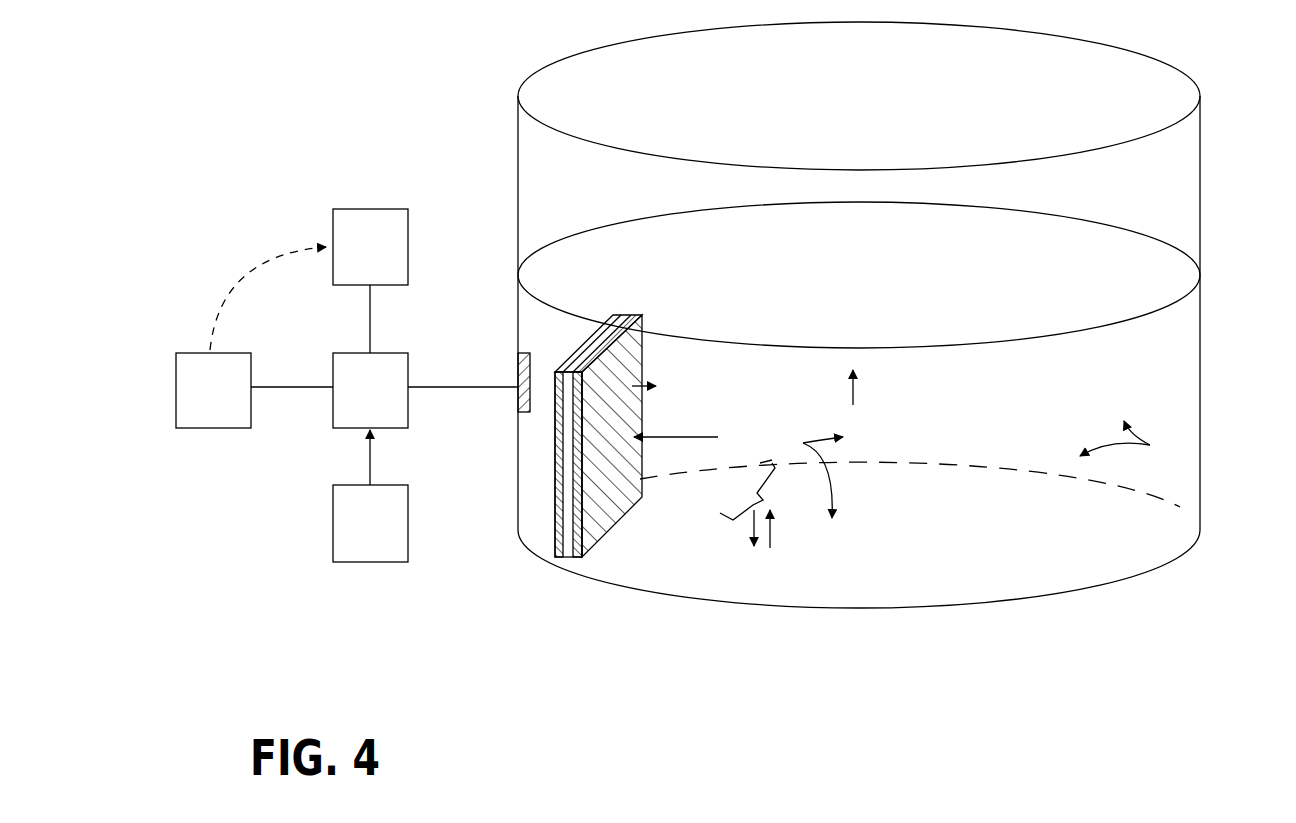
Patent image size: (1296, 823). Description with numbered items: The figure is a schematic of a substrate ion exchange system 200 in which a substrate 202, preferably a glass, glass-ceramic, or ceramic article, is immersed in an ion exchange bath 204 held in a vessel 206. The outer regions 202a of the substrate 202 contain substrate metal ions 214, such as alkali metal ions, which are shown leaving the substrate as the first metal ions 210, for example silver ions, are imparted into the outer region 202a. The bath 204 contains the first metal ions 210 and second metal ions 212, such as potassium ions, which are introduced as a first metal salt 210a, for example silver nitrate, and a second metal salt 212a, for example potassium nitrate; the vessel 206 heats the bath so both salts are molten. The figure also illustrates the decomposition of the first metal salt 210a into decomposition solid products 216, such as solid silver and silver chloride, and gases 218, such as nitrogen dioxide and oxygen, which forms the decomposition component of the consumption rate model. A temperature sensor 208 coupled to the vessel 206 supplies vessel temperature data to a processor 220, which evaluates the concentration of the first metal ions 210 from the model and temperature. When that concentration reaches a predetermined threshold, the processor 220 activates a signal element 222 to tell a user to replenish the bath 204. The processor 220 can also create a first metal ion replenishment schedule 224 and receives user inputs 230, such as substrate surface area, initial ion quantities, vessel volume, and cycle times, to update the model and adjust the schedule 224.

The substrate ion exchange system 200 is at (842, 315).
The substrate 202 is at (556, 488).
The outer regions 202a is at (556, 540).
The ion exchange bath 204 is at (1180, 372).
The vessel 206 is at (1200, 165).
The temperature sensor 208 is at (518, 352).
The first metal ions 210 is at (804, 416).
The first metal salt 210a is at (889, 417).
The second metal ions 212 is at (1150, 445).
The second metal salt 212a is at (1036, 408).
The substrate metal ions 214 is at (680, 364).
The decomposition solid products 216 is at (800, 594).
The gases 218 is at (887, 303).
The processor 220 is at (380, 400).
The signal element 222 is at (380, 257).
The first metal ion replenishment schedule 224 is at (223, 400).
The user inputs 230 is at (380, 532).